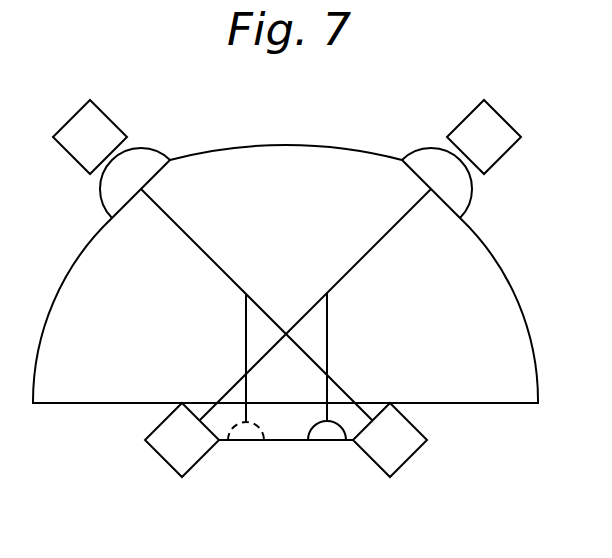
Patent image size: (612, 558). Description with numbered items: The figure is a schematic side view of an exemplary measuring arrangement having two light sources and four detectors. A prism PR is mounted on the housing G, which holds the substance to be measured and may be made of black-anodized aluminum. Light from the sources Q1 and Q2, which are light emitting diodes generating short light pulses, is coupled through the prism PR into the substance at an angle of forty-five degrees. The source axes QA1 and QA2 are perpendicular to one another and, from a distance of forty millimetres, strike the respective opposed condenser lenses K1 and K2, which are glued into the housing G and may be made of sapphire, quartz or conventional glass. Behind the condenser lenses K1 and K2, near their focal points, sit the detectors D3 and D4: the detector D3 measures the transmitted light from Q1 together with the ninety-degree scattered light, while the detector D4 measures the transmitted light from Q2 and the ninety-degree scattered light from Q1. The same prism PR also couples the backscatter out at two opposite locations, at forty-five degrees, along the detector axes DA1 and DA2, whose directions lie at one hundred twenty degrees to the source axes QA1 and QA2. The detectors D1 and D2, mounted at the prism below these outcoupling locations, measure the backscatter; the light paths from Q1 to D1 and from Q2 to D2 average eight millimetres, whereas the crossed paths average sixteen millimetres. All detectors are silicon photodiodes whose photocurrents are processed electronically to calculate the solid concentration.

The housing G is at (523, 320).
The condenser lens K1 is at (113, 195).
The condenser lens K2 is at (463, 197).
The detector D1 is at (327, 443).
The detector D2 is at (245, 443).
The detector D3 is at (80, 112).
The detector D4 is at (497, 112).
The source Q1 is at (407, 452).
The source Q2 is at (148, 445).
The source axis QA1 is at (214, 262).
The source axis QA2 is at (360, 262).
The detector axis DA1 is at (328, 340).
The detector axis DA2 is at (245, 337).
The prism PR is at (287, 430).